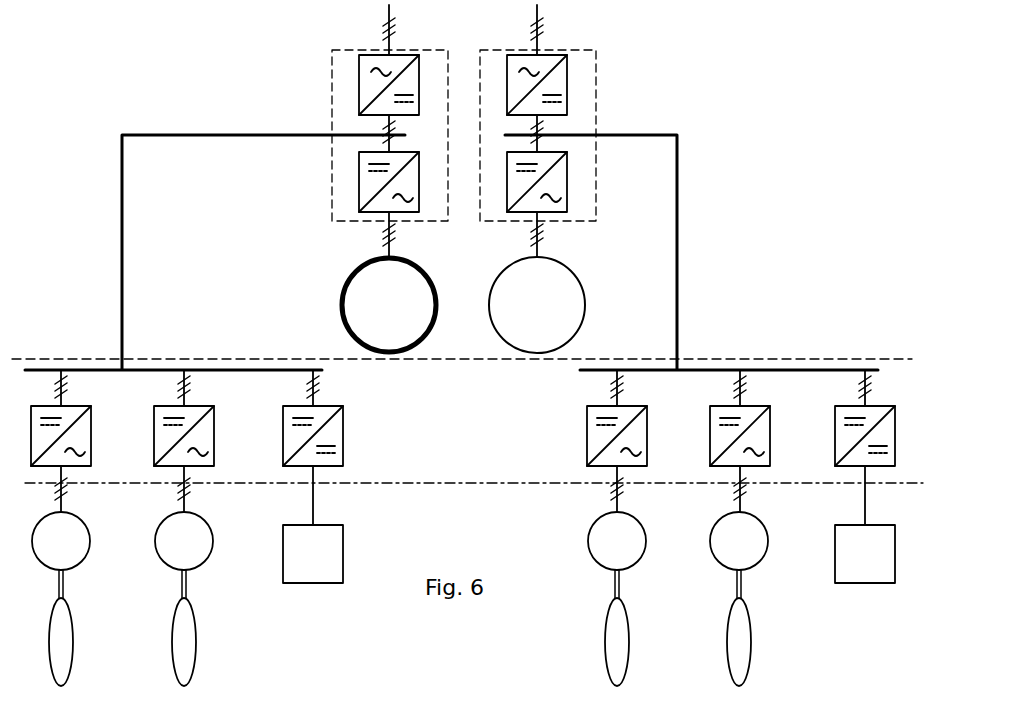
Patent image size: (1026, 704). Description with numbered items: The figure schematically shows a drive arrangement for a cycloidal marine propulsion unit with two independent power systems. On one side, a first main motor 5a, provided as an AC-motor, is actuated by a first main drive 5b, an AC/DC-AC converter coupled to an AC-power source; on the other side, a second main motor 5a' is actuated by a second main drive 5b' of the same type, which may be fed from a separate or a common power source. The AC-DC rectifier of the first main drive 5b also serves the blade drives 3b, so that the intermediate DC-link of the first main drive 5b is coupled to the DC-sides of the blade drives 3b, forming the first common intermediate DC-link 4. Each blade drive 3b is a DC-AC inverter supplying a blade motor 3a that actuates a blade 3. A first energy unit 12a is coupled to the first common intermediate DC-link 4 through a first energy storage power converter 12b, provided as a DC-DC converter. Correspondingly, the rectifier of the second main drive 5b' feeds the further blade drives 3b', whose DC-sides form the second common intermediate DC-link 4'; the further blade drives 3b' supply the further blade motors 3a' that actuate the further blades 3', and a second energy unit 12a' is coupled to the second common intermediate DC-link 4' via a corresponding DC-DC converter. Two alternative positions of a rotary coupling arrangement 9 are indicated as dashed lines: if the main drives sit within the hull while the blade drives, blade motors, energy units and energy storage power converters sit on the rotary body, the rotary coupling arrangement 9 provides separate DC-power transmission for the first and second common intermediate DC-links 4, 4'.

The blade 3 is at (147, 628).
The further blade 3' is at (707, 628).
The blade motor 3a is at (122, 541).
The further blade motor 3a' is at (678, 541).
The blade drive 3b is at (147, 448).
The further blade drive 3b' is at (706, 449).
The first common intermediate DC-link 4 is at (215, 252).
The second common intermediate DC-link 4' is at (691, 252).
The first main motor 5a is at (389, 305).
The second main motor 5a' is at (537, 305).
The first main drive 5b is at (350, 131).
The second main drive 5b' is at (586, 131).
The rotary coupling arrangement 9 is at (270, 358).
The first energy unit 12a is at (345, 587).
The second energy unit 12a' is at (884, 590).
The first energy storage power converter 12b is at (343, 467).